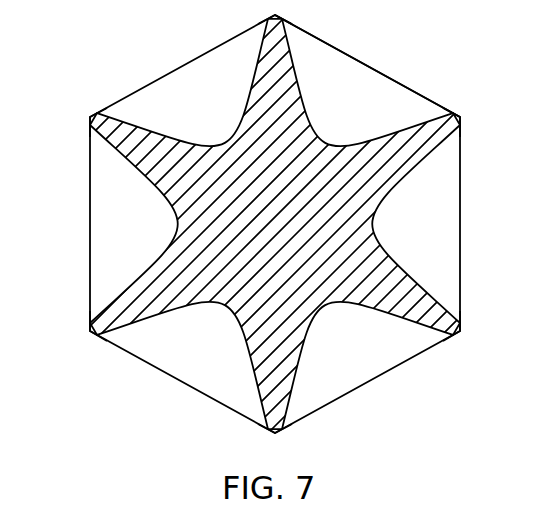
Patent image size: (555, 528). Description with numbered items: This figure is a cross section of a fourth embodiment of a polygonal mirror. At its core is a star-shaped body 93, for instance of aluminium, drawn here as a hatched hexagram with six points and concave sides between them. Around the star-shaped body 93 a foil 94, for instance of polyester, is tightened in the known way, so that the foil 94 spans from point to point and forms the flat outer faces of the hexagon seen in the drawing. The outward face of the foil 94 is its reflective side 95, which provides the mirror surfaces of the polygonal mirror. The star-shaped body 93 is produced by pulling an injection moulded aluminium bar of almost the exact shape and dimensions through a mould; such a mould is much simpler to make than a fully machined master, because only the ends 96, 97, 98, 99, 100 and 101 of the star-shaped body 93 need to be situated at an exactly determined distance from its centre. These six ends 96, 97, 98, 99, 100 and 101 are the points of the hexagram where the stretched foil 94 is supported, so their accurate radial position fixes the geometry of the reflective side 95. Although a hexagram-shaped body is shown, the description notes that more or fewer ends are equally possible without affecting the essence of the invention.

The star-shaped body 93 is at (290, 158).
The foil 94 is at (412, 90).
The reflective side 95 is at (362, 62).
The end of the star-shaped body 96 is at (461, 132).
The end of the star-shaped body 97 is at (462, 334).
The end of the star-shaped body 98 is at (280, 433).
The end of the star-shaped body 99 is at (90, 333).
The end of the star-shaped body 100 is at (90, 120).
The end of the star-shaped body 101 is at (278, 20).